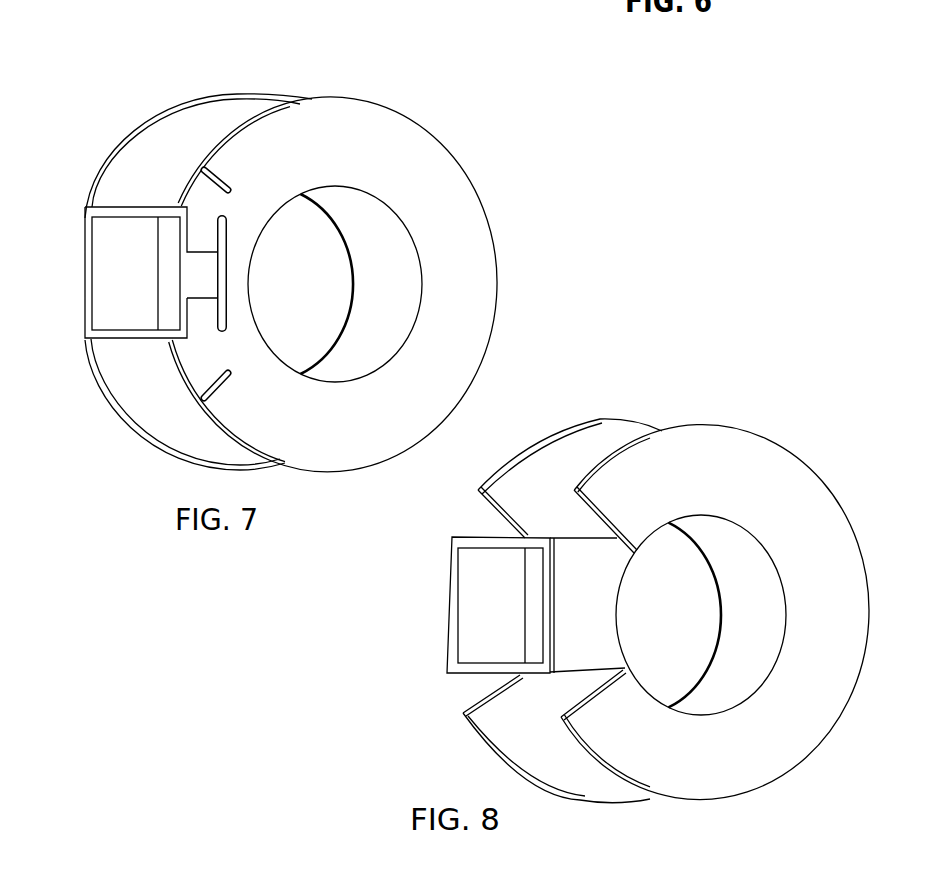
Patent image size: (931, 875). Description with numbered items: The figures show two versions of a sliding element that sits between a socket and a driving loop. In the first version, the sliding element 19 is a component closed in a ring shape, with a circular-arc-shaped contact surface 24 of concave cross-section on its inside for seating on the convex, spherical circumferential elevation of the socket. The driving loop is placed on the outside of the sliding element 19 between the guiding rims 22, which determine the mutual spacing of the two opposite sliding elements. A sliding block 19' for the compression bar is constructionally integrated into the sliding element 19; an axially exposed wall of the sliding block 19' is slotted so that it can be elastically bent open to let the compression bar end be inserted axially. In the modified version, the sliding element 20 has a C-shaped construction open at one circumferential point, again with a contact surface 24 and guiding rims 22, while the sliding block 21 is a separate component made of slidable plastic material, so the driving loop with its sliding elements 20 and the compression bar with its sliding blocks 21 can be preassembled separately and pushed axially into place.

In FIG. 7, the sliding element 19 is at (291, 263).
In FIG. 7, the sliding block 19' is at (118, 272).
In FIG. 8, the sliding element 20 is at (774, 438).
In FIG. 8, the sliding block 21 is at (449, 628).
In FIG. 7, the guiding rims 22 is at (341, 98).
In FIG. 8, the guiding rims 22 is at (688, 428).
In FIG. 7, the contact surface 24 is at (383, 235).
In FIG. 8, the contact surface 24 is at (751, 566).